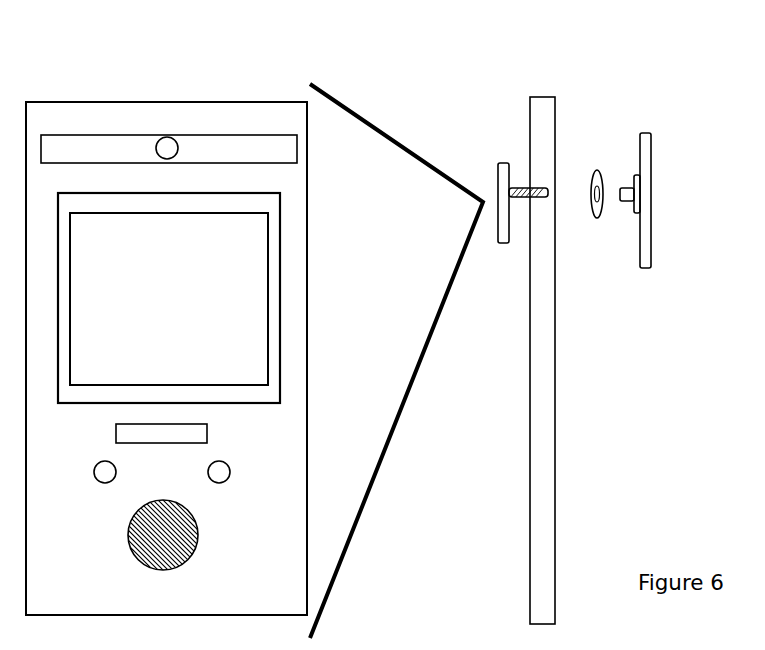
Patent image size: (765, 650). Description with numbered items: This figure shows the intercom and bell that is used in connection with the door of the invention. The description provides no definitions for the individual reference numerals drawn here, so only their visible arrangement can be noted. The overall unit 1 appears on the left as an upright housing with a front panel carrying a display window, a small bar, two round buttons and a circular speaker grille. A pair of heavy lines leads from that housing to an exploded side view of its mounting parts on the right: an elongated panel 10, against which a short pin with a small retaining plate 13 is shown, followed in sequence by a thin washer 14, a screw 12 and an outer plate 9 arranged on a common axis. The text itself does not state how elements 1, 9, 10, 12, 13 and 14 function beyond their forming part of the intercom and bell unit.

The device housing 1 is at (165, 102).
The mounting plate 9 is at (662, 158).
The panel board 10 is at (565, 533).
The screw 12 is at (627, 202).
The pin with retaining plate 13 is at (520, 188).
The washer 14 is at (597, 218).